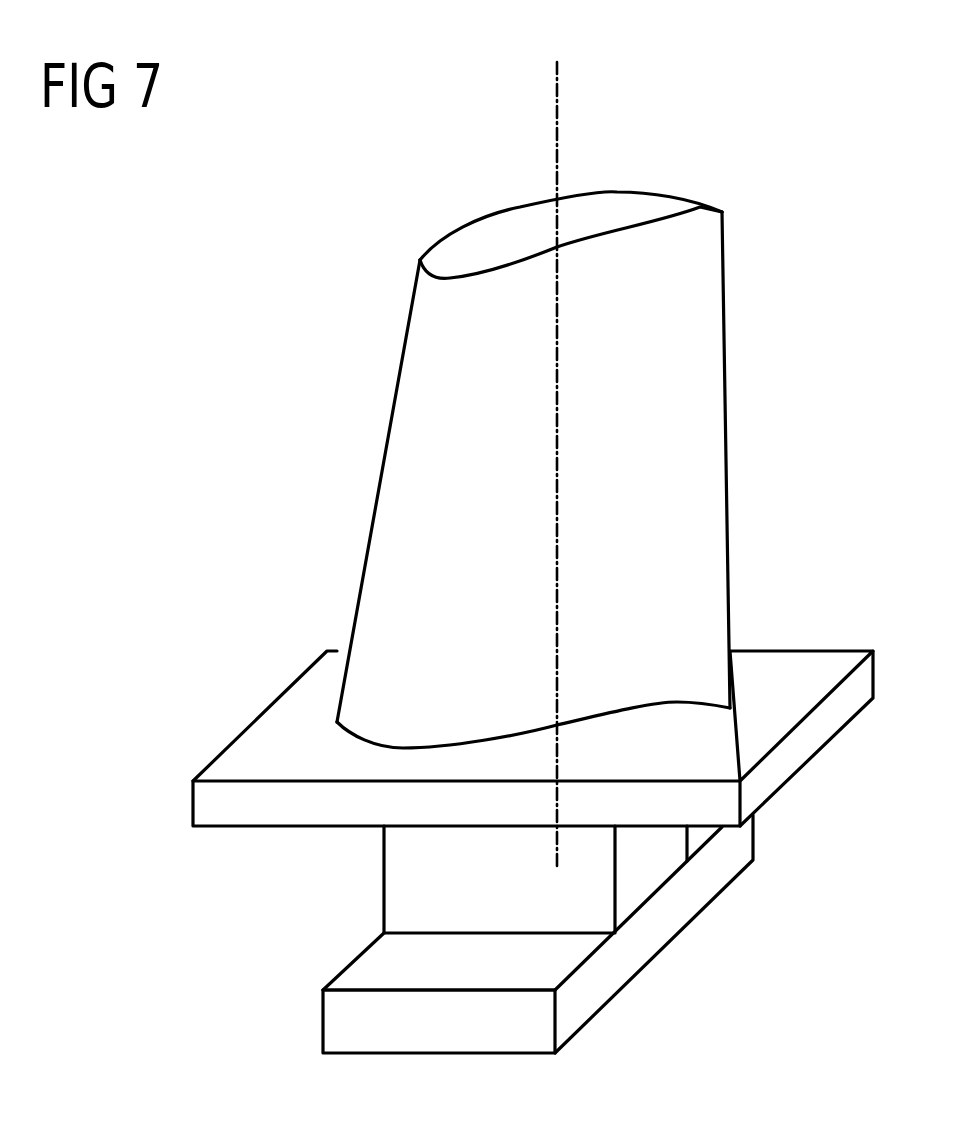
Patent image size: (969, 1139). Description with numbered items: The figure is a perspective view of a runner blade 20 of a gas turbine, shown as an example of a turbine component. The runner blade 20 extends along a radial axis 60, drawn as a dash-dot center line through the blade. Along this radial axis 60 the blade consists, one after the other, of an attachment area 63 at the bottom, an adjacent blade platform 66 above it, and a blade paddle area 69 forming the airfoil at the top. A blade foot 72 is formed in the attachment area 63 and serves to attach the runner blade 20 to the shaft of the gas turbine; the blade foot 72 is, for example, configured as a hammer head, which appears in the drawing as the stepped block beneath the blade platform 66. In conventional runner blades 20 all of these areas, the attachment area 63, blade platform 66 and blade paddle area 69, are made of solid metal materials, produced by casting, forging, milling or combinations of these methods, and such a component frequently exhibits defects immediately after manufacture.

The radial axis 60 is at (557, 117).
The runner blade 20 is at (712, 531).
The blade paddle area 69 is at (385, 511).
The blade platform 66 is at (810, 728).
The attachment area 63 is at (662, 928).
The blade foot 72 is at (367, 963).